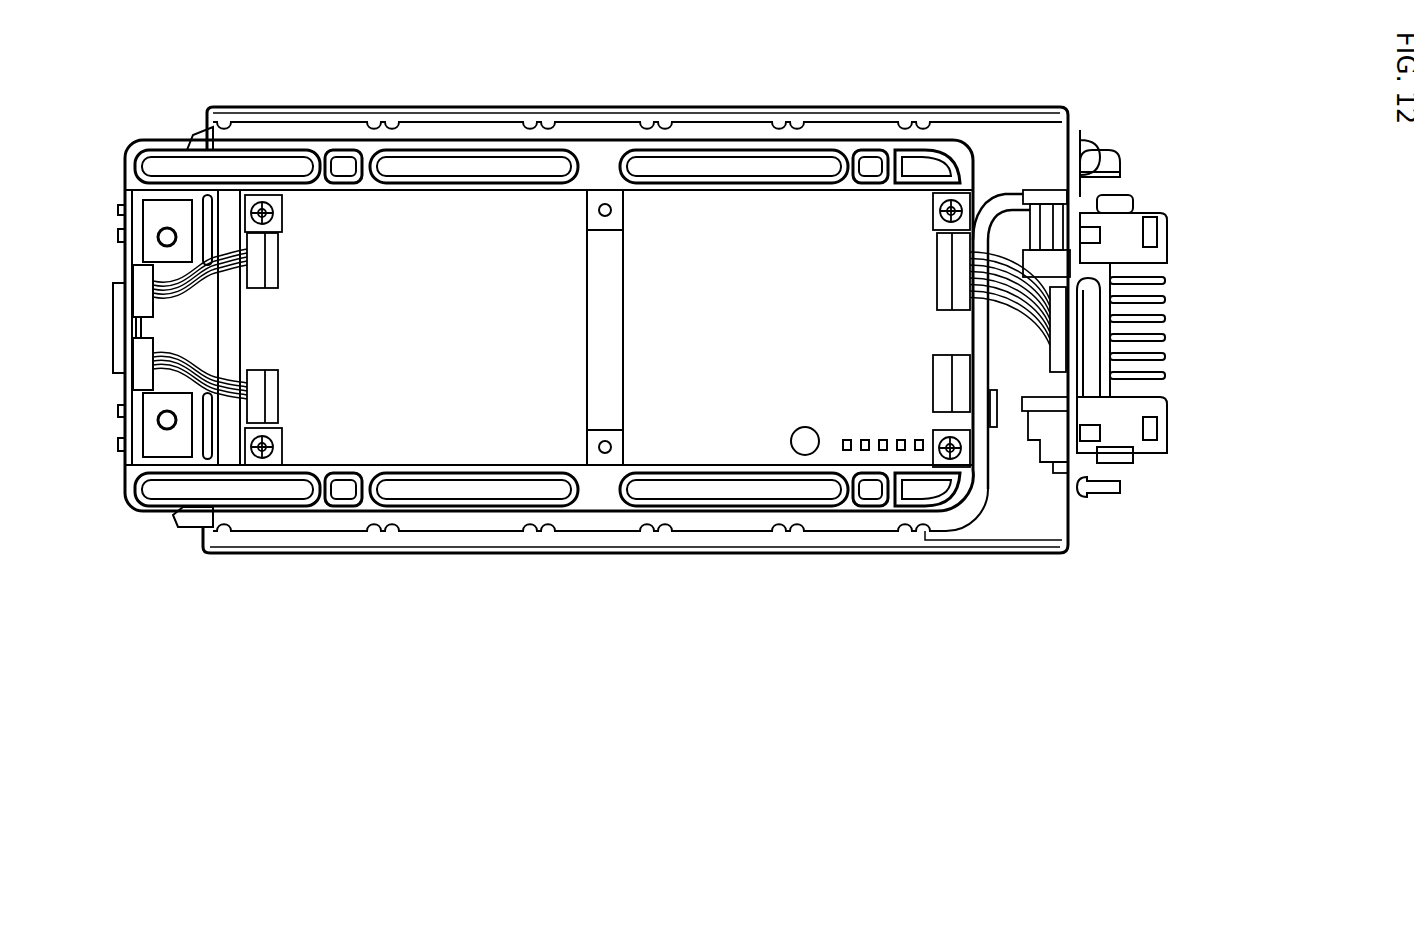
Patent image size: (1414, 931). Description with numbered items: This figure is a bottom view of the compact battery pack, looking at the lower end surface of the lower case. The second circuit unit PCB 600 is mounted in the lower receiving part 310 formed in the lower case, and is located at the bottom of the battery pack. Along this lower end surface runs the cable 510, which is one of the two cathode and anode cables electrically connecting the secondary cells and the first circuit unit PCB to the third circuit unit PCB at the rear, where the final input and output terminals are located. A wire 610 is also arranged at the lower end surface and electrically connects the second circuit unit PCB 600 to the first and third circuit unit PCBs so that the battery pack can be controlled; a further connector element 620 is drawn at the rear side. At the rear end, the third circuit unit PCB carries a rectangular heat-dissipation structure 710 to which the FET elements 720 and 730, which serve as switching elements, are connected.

The lower receiving part 310 is at (589, 190).
The cable 510 is at (613, 522).
The second circuit unit PCB 600 is at (427, 447).
The wire 610 is at (192, 393).
The connector block 620 is at (955, 292).
The rectangular heat-dissipation structure 710 is at (1167, 400).
The FET element 720 is at (1123, 193).
The FET element 730 is at (1135, 457).